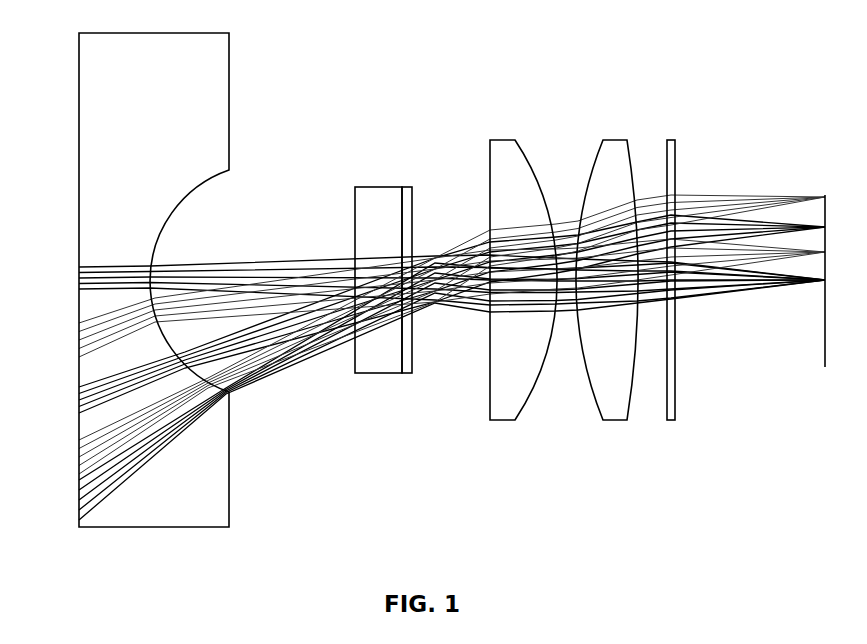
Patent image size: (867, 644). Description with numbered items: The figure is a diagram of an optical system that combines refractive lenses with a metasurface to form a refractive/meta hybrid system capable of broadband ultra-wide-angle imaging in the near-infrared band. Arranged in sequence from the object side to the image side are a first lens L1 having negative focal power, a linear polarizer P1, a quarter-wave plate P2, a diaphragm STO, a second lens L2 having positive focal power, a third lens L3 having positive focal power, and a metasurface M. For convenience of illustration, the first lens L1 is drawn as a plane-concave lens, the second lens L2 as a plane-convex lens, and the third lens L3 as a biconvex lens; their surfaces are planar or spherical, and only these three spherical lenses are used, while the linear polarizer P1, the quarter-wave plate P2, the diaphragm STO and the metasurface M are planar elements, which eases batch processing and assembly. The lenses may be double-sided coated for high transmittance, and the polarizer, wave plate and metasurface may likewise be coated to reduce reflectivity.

The first lens L1 is at (100, 133).
The linear polarizer P1 is at (383, 200).
The quarter-wave plate P2 is at (407, 193).
The diaphragm STO is at (435, 255).
The second lens L2 is at (502, 153).
The third lens L3 is at (610, 153).
The metasurface M is at (672, 153).